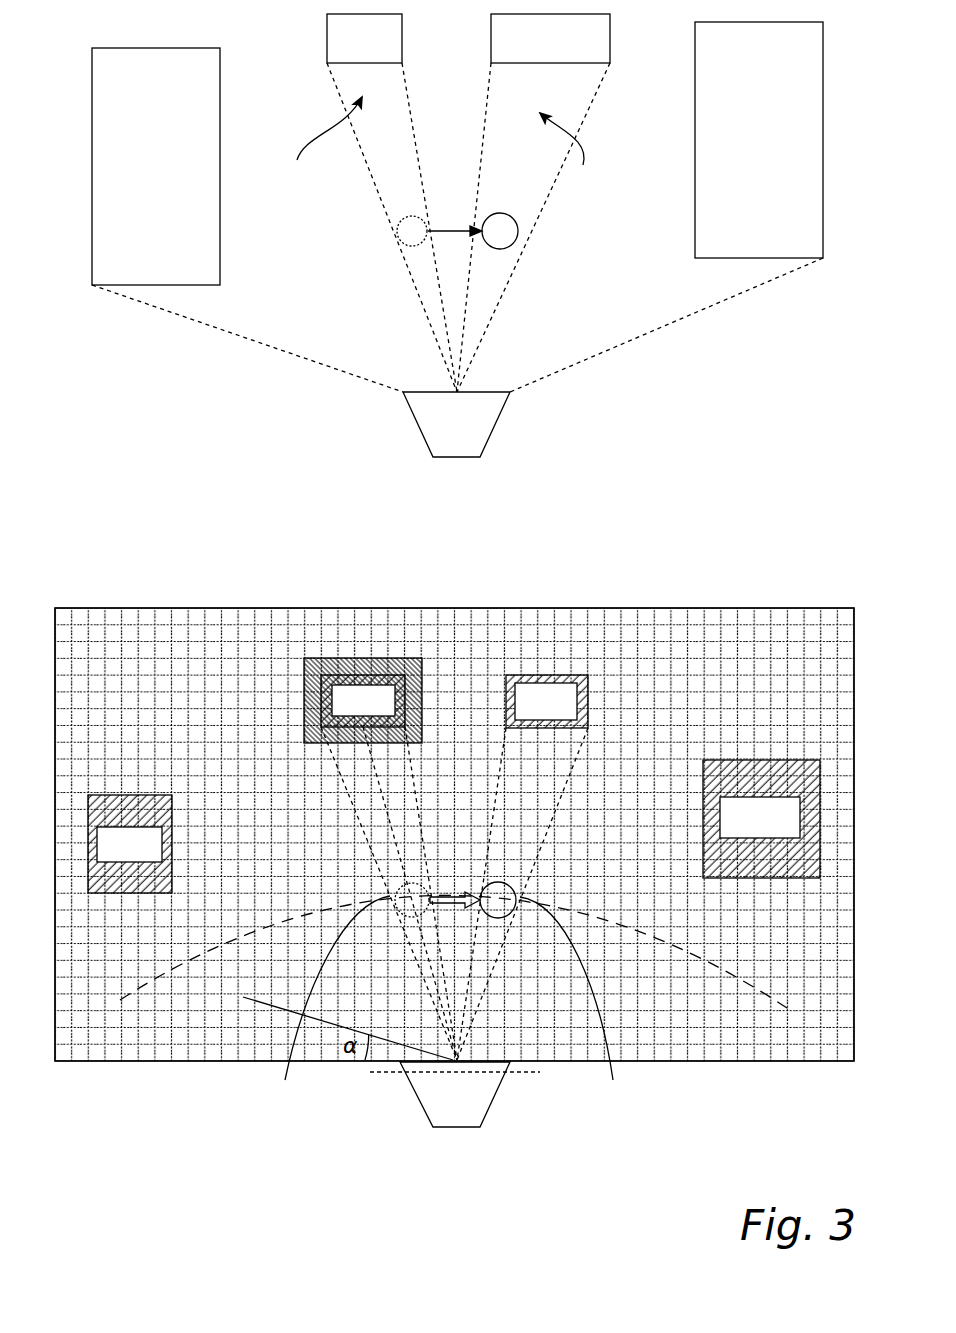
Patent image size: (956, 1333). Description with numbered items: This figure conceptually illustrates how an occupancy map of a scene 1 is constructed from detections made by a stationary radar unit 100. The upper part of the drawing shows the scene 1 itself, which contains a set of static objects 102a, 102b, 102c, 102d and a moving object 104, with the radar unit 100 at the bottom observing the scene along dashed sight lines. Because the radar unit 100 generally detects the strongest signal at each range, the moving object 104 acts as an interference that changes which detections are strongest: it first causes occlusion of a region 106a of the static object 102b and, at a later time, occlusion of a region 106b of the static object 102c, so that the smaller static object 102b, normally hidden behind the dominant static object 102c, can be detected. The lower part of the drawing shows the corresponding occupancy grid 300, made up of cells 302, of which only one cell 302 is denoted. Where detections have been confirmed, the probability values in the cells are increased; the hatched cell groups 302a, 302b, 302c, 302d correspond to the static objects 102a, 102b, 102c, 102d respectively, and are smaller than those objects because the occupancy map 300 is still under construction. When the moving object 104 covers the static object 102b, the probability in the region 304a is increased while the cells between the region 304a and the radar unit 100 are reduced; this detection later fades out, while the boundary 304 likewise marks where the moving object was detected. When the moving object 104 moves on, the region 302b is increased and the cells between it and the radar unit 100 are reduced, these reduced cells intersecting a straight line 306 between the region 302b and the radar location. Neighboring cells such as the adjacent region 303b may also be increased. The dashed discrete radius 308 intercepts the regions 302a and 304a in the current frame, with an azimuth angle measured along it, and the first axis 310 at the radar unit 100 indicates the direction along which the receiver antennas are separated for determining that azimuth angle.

The scene 1 is at (453, 107).
The stationary radar unit 100 is at (497, 422).
The static object 102a is at (134, 172).
The static object 102b is at (336, 53).
The static object 102c is at (522, 53).
The static object 102d is at (737, 147).
The moving object 104 is at (508, 237).
The occluded region of object 102b 106a is at (314, 145).
The occluded region of object 102c 106b is at (577, 157).
The occupancy grid 300 is at (447, 877).
The cell 302 is at (165, 1052).
The group of cells 302a is at (106, 856).
The group of cells 302b is at (340, 712).
The group of cells 302c is at (523, 713).
The group of cells 302d is at (737, 829).
The adjacent region 303b is at (360, 662).
The region 304 is at (613, 1080).
The region 304a is at (285, 1080).
The straight line 306 is at (387, 802).
The discrete radius 308 is at (737, 968).
The first axis 310 is at (397, 1075).